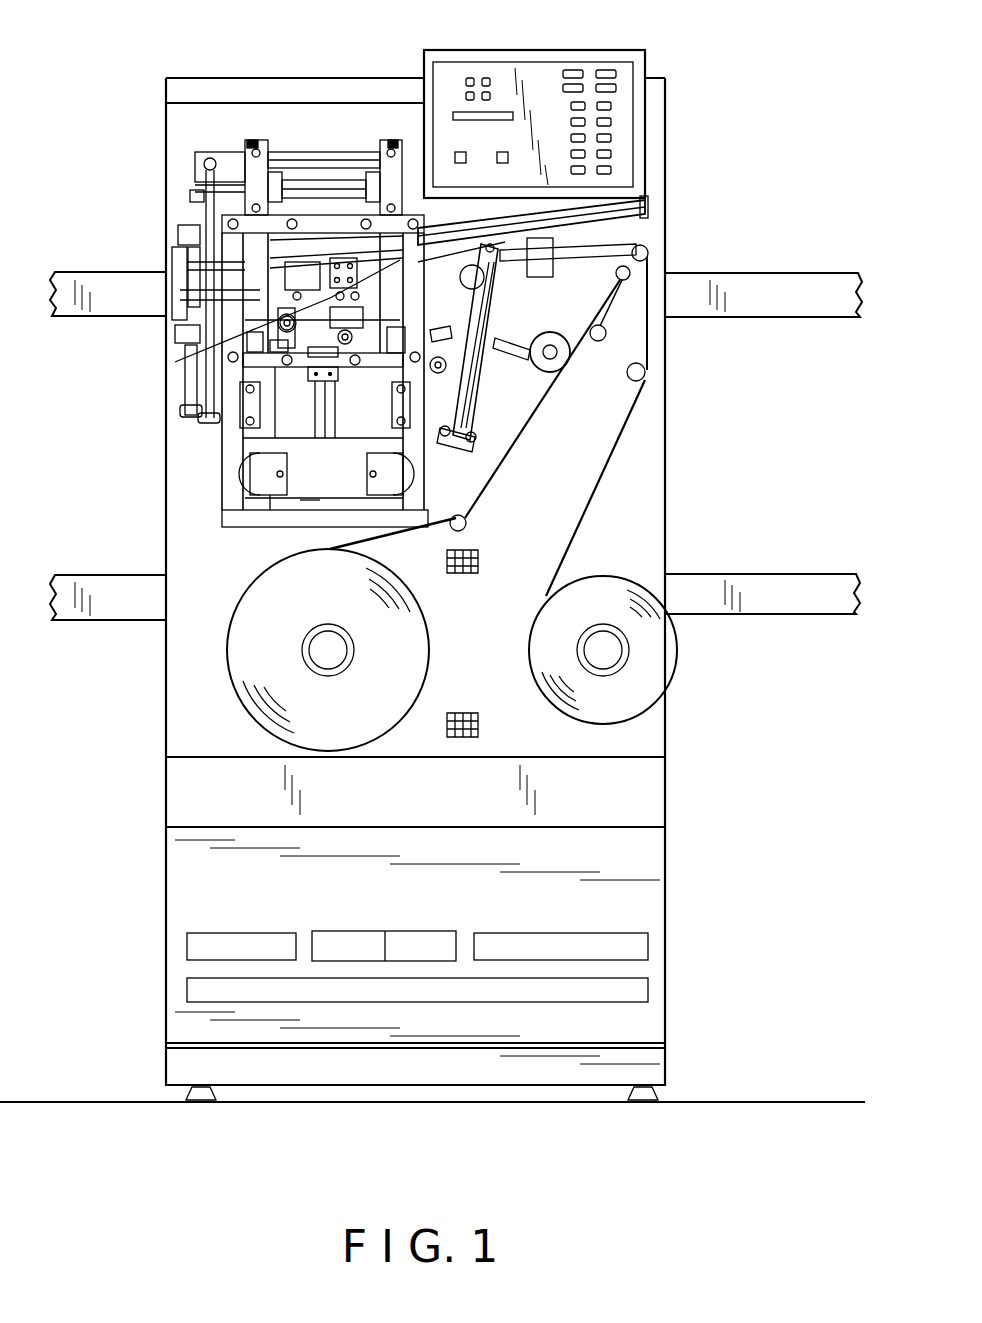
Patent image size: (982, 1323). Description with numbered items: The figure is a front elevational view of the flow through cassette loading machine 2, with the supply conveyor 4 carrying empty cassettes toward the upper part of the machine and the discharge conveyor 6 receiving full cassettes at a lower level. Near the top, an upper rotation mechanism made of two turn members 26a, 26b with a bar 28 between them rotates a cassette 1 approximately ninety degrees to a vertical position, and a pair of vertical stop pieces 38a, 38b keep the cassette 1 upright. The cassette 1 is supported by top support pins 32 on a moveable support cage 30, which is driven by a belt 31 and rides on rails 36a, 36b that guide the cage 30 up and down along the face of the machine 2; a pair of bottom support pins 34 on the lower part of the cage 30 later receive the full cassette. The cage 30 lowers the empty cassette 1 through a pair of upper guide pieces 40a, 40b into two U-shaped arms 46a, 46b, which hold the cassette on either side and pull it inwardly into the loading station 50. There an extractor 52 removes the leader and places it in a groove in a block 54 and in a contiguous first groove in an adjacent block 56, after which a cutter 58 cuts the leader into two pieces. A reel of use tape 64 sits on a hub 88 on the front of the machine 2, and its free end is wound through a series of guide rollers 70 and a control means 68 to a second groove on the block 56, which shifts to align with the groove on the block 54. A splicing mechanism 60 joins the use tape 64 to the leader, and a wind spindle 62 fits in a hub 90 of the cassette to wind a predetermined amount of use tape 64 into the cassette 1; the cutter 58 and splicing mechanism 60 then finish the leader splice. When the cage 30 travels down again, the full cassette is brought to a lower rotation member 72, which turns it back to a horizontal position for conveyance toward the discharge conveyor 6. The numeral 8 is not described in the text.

The cassette 1 is at (265, 108).
The cassette loading machine 2 is at (510, 48).
The supply conveyor 4 is at (802, 290).
The discharge conveyor 6 is at (790, 576).
The supply reel hub 8 is at (326, 638).
The turn member 26a is at (275, 182).
The turn member 26b is at (358, 200).
The bar 28 is at (303, 195).
The moveable support cage 30 is at (275, 348).
The belt 31 is at (203, 217).
The top support pins 32 is at (325, 170).
The bottom support pins 34 is at (287, 367).
The rail 36a is at (232, 475).
The rail 36b is at (428, 488).
The vertical stop piece 38a is at (252, 160).
The vertical stop piece 38b is at (415, 200).
The upper guide piece 40a is at (240, 295).
The upper guide piece 40b is at (424, 264).
The U-shaped arm 46a is at (197, 417).
The U-shaped arm 46b is at (450, 330).
The loading station 50 is at (250, 288).
The extractor 52 is at (205, 295).
The block 54 is at (422, 230).
The block 56 is at (268, 275).
The cutter 58 is at (287, 325).
The splicing mechanism 60 is at (342, 372).
The wind spindle 62 is at (283, 367).
The use tape 64 is at (245, 633).
The control means 68 is at (480, 398).
The guide rollers 70 is at (630, 268).
The lower rotation member 72 is at (312, 510).
The hub 88 is at (612, 656).
The hub 90 is at (280, 495).